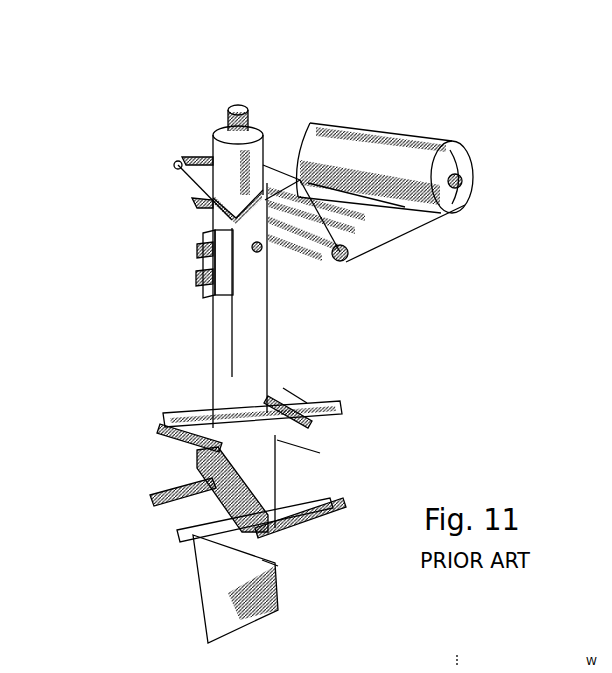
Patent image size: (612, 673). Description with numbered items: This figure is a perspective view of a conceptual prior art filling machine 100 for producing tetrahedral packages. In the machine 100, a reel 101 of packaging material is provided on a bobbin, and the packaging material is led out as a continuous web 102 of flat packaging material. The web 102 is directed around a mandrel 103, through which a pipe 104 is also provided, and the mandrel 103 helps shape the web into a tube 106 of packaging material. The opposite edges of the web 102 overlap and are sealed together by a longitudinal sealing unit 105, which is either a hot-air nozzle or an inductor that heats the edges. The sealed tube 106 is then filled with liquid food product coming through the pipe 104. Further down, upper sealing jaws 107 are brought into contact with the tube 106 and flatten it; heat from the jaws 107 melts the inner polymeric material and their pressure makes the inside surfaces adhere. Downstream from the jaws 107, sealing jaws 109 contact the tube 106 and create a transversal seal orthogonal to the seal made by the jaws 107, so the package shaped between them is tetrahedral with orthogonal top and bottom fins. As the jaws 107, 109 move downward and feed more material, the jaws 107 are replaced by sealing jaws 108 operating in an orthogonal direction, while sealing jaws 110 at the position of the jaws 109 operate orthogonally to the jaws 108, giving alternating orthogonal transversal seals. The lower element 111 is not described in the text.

The filling machine 100 is at (137, 218).
The reel 101 is at (382, 135).
The web 102 is at (378, 233).
The mandrel 103 is at (255, 146).
The pipe 104 is at (248, 118).
The longitudinal sealing unit 105 is at (200, 262).
The tube 106 is at (216, 325).
The upper sealing jaws 107 is at (199, 406).
The sealing jaws 108 is at (183, 446).
The sealing jaws 109 is at (328, 467).
The sealing jaws 110 is at (178, 492).
The base plate 111 is at (281, 587).